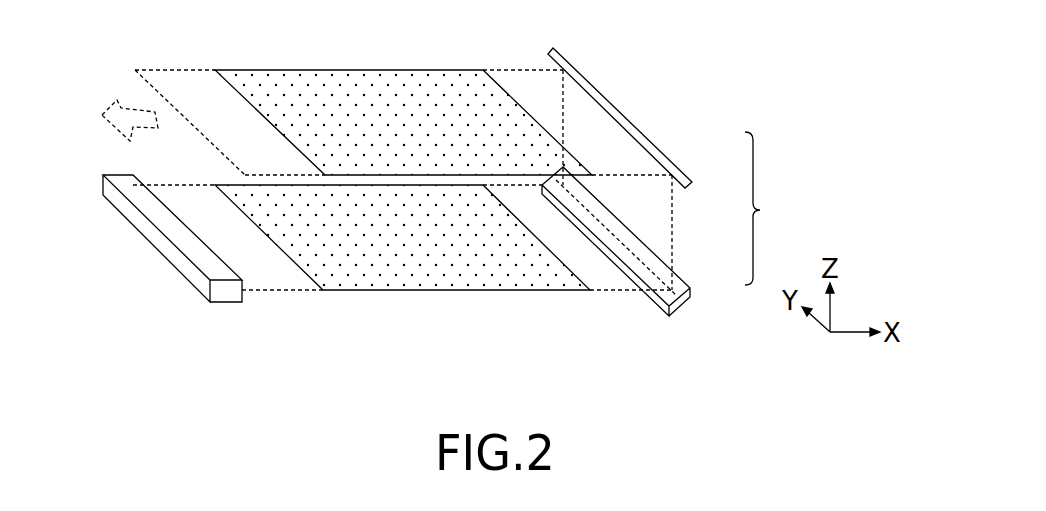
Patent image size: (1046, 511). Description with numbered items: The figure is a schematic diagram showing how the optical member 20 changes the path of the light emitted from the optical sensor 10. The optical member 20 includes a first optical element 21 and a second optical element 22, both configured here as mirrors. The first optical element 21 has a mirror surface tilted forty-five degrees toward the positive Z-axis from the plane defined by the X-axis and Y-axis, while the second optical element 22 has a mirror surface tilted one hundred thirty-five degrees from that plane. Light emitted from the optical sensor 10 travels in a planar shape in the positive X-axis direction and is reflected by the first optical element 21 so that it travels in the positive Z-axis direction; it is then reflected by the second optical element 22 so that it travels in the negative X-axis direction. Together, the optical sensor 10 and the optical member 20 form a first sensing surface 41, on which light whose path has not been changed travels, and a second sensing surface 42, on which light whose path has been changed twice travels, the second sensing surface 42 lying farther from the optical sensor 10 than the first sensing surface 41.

The optical sensor 10 is at (133, 175).
The optical member 20 is at (771, 208).
The first optical element 21 is at (680, 277).
The second optical element 22 is at (687, 173).
The first sensing surface 41 is at (430, 292).
The second sensing surface 42 is at (430, 70).